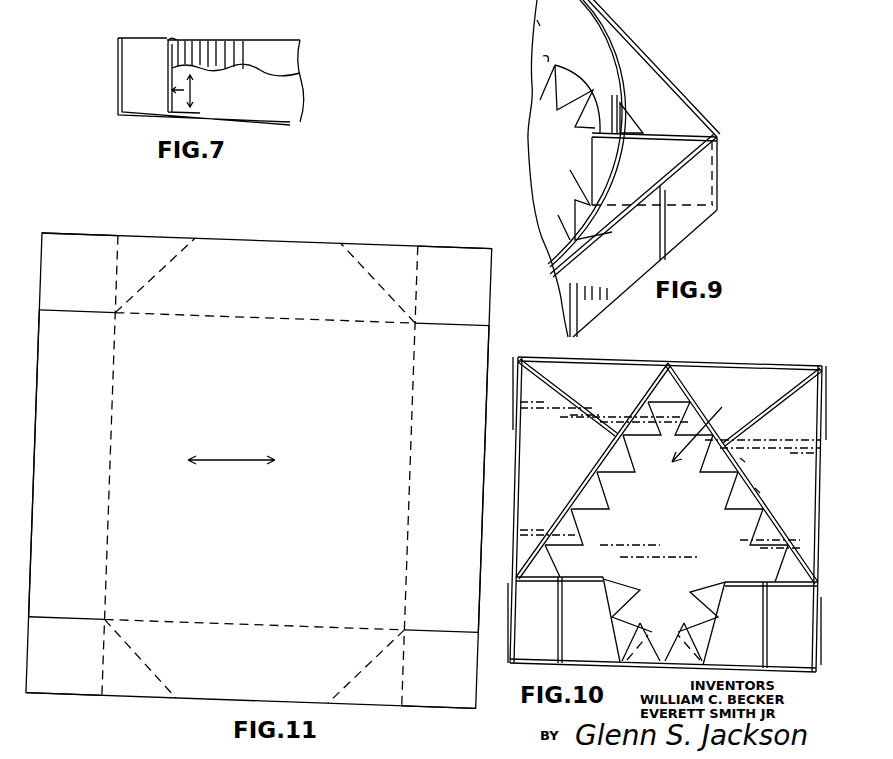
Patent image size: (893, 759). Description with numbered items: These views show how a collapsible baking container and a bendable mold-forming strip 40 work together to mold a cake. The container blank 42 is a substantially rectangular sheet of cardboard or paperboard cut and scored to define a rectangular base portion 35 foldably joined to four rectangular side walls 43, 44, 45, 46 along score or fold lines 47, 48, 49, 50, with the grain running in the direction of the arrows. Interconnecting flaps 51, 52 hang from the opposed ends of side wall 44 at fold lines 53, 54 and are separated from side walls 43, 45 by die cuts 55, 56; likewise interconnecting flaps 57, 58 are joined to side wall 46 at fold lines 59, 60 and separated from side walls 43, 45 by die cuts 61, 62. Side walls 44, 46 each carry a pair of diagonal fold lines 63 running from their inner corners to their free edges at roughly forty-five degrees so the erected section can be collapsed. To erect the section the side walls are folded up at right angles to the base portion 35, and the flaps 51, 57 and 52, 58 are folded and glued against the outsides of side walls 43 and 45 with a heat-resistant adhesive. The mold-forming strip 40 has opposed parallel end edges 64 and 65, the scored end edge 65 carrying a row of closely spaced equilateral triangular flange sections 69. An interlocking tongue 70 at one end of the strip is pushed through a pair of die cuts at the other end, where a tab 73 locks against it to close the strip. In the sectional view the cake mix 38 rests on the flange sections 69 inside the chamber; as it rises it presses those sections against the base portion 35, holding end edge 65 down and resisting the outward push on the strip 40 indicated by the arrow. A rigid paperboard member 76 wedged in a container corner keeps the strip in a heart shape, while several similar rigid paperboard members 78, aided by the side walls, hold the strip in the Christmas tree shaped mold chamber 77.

In FIG. 7, the base portion or wall 35 is at (300, 103).
In FIG. 9, the base portion or wall 35 is at (540, 146).
In FIG. 10, the base portion or wall 35 is at (568, 434).
In FIG. 11, the base portion or wall 35 is at (306, 494).
In FIG. 7, the cake mix 38 is at (243, 80).
In FIG. 7, the mold-forming strip 40 is at (173, 40).
In FIG. 9, the mold-forming strip 40 is at (537, 23).
In FIG. 10, the mold-forming strip 40 is at (648, 392).
In FIG. 11, the container blank 42 is at (345, 214).
In FIG. 10, the side wall 43 is at (520, 467).
In FIG. 11, the side wall 43 is at (83, 466).
In FIG. 7, the side wall 44 is at (118, 71).
In FIG. 9, the side wall 44 is at (658, 72).
In FIG. 10, the side wall 44 is at (710, 360).
In FIG. 11, the side wall 44 is at (286, 294).
In FIG. 9, the side wall 45 is at (648, 243).
In FIG. 10, the side wall 45 is at (815, 492).
In FIG. 11, the side wall 45 is at (456, 496).
In FIG. 10, the side wall 46 is at (525, 665).
In FIG. 11, the side wall 46 is at (251, 677).
In FIG. 11, the score or fold line 47 is at (112, 390).
In FIG. 11, the score or fold line 48 is at (250, 316).
In FIG. 11, the score or fold line 49 is at (411, 407).
In FIG. 11, the score or fold line 50 is at (285, 625).
In FIG. 10, the interconnecting flap 51 is at (513, 370).
In FIG. 11, the interconnecting flap 51 is at (88, 286).
In FIG. 9, the interconnecting flap 52 is at (695, 190).
In FIG. 10, the interconnecting flap 52 is at (826, 368).
In FIG. 11, the interconnecting flap 52 is at (470, 297).
In FIG. 11, the score or fold line 53 is at (118, 240).
In FIG. 11, the score or fold line 54 is at (416, 248).
In FIG. 11, the die cut 55 is at (82, 315).
In FIG. 11, the die cut 56 is at (466, 327).
In FIG. 10, the interconnecting flap 57 is at (505, 600).
In FIG. 11, the interconnecting flap 57 is at (76, 662).
In FIG. 10, the interconnecting flap 58 is at (818, 623).
In FIG. 11, the interconnecting flap 58 is at (455, 679).
In FIG. 11, the score or fold line 59 is at (105, 680).
In FIG. 11, the score or fold line 60 is at (395, 705).
In FIG. 11, the die cut 61 is at (68, 617).
In FIG. 11, the die cut 62 is at (440, 630).
In FIG. 11, the diagonal score or fold line 63 is at (200, 240).
In FIG. 9, the end edge 64 is at (622, 40).
In FIG. 9, the end edge 65 is at (545, 60).
In FIG. 7, the triangular flange section 69 is at (207, 113).
In FIG. 9, the triangular flange section 69 is at (540, 78).
In FIG. 10, the triangular flange section 69 is at (605, 493).
In FIG. 10, the interlocking tongue 70 is at (740, 460).
In FIG. 10, the tab 73 is at (757, 490).
In FIG. 9, the rigid paperboard member 76 is at (673, 150).
In FIG. 10, the mold chamber 77 is at (705, 424).
In FIG. 10, the rigid paperboard member 78 is at (770, 395).